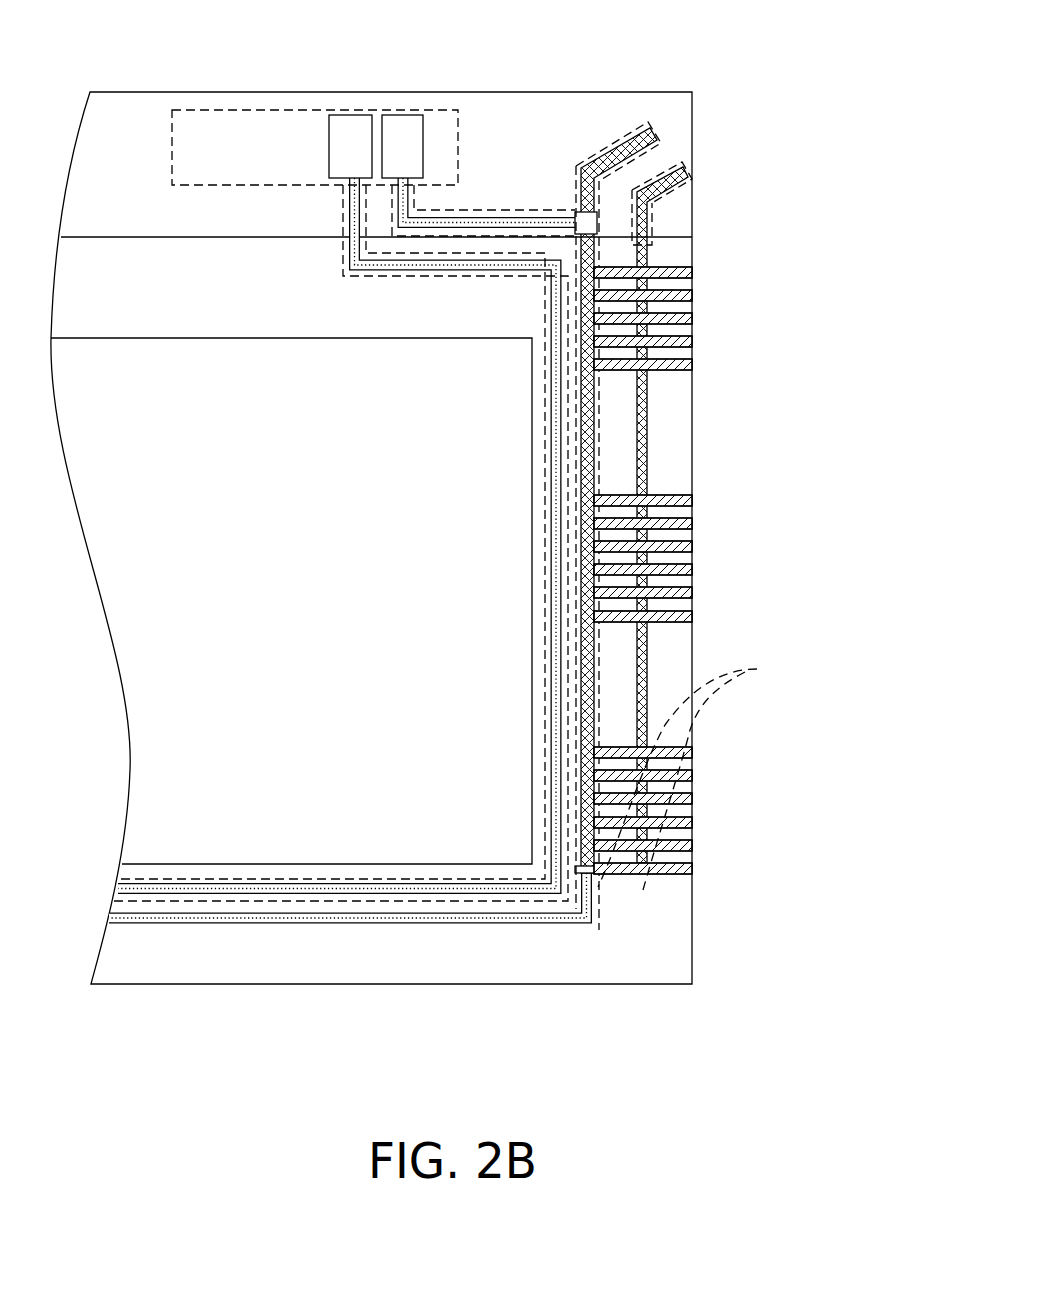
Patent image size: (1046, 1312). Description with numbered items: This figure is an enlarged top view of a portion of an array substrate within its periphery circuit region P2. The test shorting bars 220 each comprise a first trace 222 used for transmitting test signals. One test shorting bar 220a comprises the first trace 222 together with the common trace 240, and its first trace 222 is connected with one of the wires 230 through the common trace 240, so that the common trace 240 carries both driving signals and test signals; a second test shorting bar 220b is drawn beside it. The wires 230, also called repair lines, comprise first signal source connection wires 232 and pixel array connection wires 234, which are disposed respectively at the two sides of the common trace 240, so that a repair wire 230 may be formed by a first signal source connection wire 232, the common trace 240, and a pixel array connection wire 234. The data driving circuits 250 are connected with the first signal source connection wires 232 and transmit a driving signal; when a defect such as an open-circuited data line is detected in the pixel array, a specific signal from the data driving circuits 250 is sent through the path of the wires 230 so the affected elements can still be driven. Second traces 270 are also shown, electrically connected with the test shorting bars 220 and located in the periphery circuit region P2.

The periphery circuit region P2 is at (104, 126).
The data driving circuits 250 is at (408, 128).
The test shorting bars 220 is at (738, 465).
The test shorting bar 220a is at (777, 5).
The test shorting bar 220b is at (692, 247).
The first trace 222 is at (597, 216).
The common trace 240 is at (588, 216).
The wires 230 is at (729, 565).
The first signal source connection wires 232 is at (597, 240).
The pixel array connection wires 234 is at (698, 768).
The second traces 270 is at (692, 752).